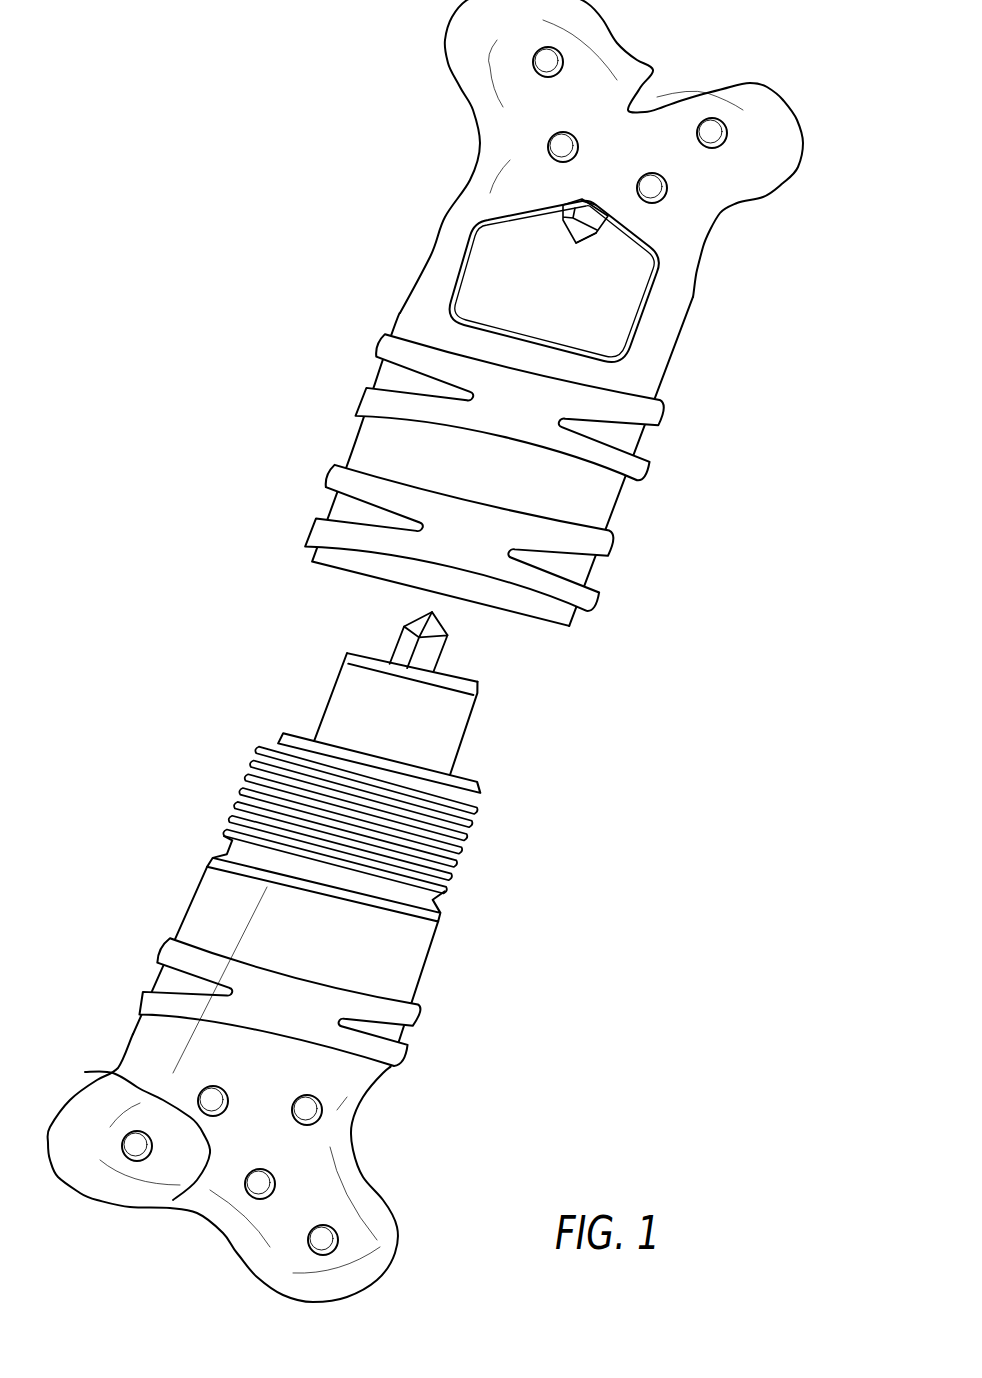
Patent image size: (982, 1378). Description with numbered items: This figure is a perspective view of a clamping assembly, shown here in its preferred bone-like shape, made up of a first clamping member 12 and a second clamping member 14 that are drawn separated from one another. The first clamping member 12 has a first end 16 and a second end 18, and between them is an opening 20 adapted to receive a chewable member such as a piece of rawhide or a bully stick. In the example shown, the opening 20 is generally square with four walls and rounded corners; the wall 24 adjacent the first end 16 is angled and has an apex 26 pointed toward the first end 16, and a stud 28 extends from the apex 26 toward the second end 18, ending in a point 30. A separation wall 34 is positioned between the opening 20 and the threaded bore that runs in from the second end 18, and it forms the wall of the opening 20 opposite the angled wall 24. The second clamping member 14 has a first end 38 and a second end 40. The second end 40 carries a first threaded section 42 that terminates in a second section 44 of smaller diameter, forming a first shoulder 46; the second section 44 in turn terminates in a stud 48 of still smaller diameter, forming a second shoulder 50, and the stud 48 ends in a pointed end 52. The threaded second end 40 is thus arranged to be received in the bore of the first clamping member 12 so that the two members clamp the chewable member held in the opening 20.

The first clamping member 12 is at (763, 200).
The second clamping member 14 is at (333, 977).
The first end 16 is at (630, 112).
The second end 18 is at (423, 588).
The opening 20 is at (463, 258).
The angled wall 24 is at (712, 240).
The apex 26 is at (590, 201).
The stud 28 is at (575, 200).
The point 30 is at (582, 232).
The separation wall 34 is at (537, 367).
The first end 38 is at (113, 1072).
The second end 40 is at (265, 877).
The first threaded section 42 is at (340, 837).
The second section 44 is at (397, 697).
The first shoulder 46 is at (307, 738).
The stud 48 is at (425, 650).
The second shoulder 50 is at (378, 648).
The pointed end 52 is at (430, 616).